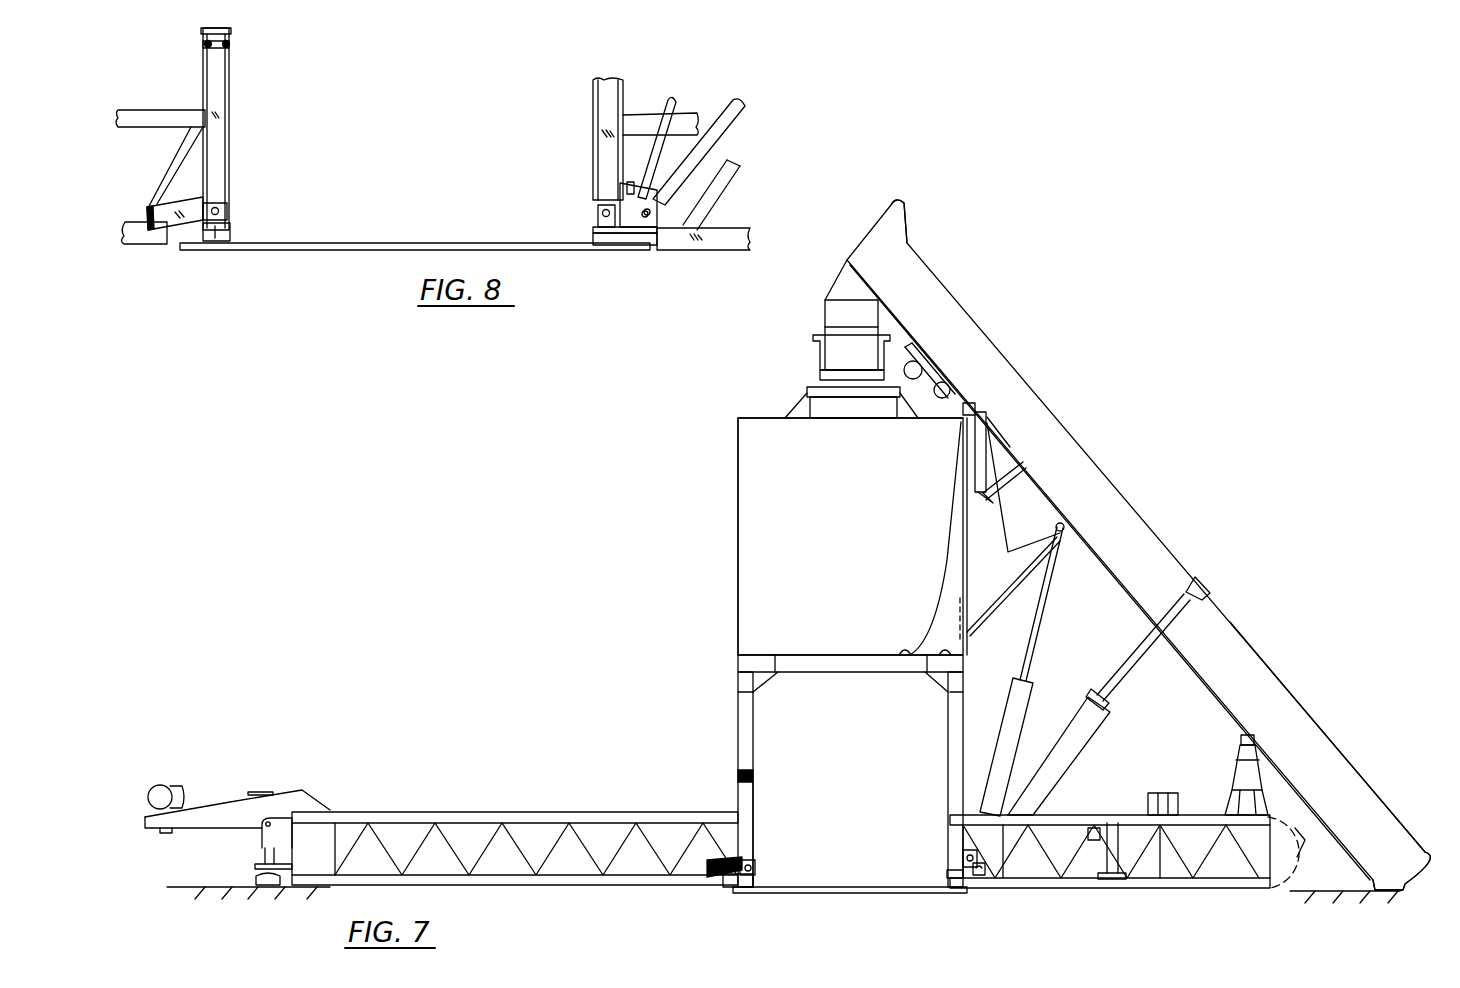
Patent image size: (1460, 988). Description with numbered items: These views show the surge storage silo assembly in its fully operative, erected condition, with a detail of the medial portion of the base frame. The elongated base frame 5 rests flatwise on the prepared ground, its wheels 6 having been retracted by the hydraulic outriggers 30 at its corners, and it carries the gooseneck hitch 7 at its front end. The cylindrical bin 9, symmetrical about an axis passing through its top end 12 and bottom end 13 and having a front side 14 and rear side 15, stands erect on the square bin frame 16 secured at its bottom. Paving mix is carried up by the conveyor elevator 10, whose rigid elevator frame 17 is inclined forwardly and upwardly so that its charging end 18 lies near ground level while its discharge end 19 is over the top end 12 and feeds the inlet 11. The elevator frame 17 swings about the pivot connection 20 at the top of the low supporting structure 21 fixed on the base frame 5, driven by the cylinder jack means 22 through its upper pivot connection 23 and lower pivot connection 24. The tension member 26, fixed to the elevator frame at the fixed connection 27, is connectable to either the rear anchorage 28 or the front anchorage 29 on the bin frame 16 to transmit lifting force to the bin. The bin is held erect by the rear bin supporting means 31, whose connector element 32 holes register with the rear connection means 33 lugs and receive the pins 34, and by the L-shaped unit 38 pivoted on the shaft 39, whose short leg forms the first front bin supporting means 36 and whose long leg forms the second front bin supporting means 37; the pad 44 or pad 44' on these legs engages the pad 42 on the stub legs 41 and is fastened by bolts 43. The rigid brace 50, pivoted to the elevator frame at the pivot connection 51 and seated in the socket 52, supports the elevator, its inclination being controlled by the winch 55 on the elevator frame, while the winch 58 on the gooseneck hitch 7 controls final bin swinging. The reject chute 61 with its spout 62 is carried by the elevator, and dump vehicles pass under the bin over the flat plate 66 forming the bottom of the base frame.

In FIG. 8, the base frame 5 is at (138, 108).
In FIG. 7, the base frame 5 is at (425, 812).
In FIG. 7, the wheels 6 is at (1292, 860).
In FIG. 7, the gooseneck hitch 7 is at (145, 822).
In FIG. 7, the bin 9 is at (738, 503).
In FIG. 7, the conveyor elevator 10 is at (1116, 490).
In FIG. 7, the inlet 11 is at (812, 395).
In FIG. 7, the top end 12 is at (748, 418).
In FIG. 7, the bottom end 13 is at (806, 674).
In FIG. 7, the front side 14 is at (738, 580).
In FIG. 7, the rear side 15 is at (963, 542).
In FIG. 7, the bin frame 16 is at (738, 664).
In FIG. 7, the elevator frame 17 is at (1262, 663).
In FIG. 7, the charging end 18 is at (1405, 822).
In FIG. 7, the discharge end 19 is at (922, 242).
In FIG. 7, the pivot connection 20 is at (1240, 738).
In FIG. 7, the supporting structure 21 is at (1236, 762).
In FIG. 8, the cylinder jack means 22 is at (740, 130).
In FIG. 7, the cylinder jack means 22 is at (1078, 768).
In FIG. 7, the upper pivot connection 23 is at (1206, 588).
In FIG. 8, the lower pivot connection 24 is at (680, 243).
In FIG. 7, the lower pivot connection 24 is at (980, 877).
In FIG. 7, the tension member 26 is at (947, 560).
In FIG. 7, the fixed connection 27 is at (963, 408).
In FIG. 7, the rear anchorage 28 is at (952, 653).
In FIG. 7, the front anchorage 29 is at (905, 652).
In FIG. 7, the outriggers 30 is at (255, 872).
In FIG. 8, the rear bin supporting means 31 is at (593, 92).
In FIG. 7, the rear bin supporting means 31 is at (948, 757).
In FIG. 8, the connector element 32 is at (620, 205).
In FIG. 8, the rear connection means 33 is at (593, 230).
In FIG. 7, the rear connection means 33 is at (947, 873).
In FIG. 8, the pins 34 is at (598, 213).
In FIG. 7, the pins 34 is at (960, 860).
In FIG. 8, the first front bin supporting means 36 is at (152, 244).
In FIG. 7, the first front bin supporting means 36 is at (730, 887).
In FIG. 8, the second front bin supporting means 37 is at (230, 66).
In FIG. 8, the L-shaped unit 38 is at (233, 170).
In FIG. 7, the L-shaped unit 38 is at (755, 808).
In FIG. 8, the shaft 39 is at (228, 209).
In FIG. 7, the shaft 39 is at (755, 862).
In FIG. 8, the stub legs 41 is at (203, 31).
In FIG. 7, the stub legs 41 is at (738, 712).
In FIG. 8, the pad 42 is at (222, 42).
In FIG. 7, the pad 42 is at (755, 770).
In FIG. 8, the bolts 43 is at (203, 45).
In FIG. 8, the pad 44 is at (150, 204).
In FIG. 7, the pad 44 is at (718, 852).
In FIG. 8, the pad 44' is at (256, 44).
In FIG. 7, the pad 44' is at (774, 778).
In FIG. 8, the brace 50 is at (668, 103).
In FIG. 7, the brace 50 is at (1020, 722).
In FIG. 7, the pivot connection 51 is at (1062, 531).
In FIG. 8, the socket 52 is at (627, 187).
In FIG. 7, the winch 55 is at (951, 385).
In FIG. 7, the winch 58 is at (165, 785).
In FIG. 7, the reject chute 61 is at (1006, 524).
In FIG. 7, the spout 62 is at (980, 623).
In FIG. 8, the flat plate 66 is at (447, 243).
In FIG. 7, the flat plate 66 is at (852, 887).